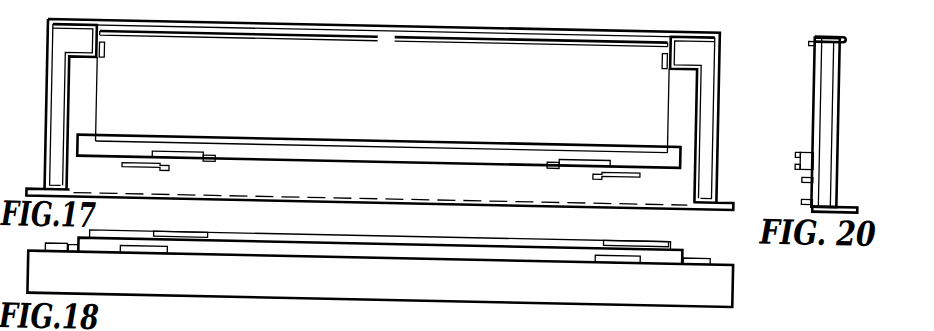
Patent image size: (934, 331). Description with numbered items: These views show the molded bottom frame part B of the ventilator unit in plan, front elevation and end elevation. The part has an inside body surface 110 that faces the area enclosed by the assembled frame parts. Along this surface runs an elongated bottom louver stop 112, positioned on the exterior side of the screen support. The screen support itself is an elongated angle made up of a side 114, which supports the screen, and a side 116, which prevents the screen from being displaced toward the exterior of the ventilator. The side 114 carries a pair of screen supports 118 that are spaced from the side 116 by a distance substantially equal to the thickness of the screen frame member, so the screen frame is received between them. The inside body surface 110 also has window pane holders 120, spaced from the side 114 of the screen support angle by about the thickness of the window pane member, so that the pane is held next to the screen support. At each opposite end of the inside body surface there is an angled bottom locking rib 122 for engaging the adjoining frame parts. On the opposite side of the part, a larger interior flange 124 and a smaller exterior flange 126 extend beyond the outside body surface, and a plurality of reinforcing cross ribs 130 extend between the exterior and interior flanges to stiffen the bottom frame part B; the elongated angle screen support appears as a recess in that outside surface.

In FIG. 17, the bottom frame part B is at (655, 19).
In FIG. 17, the inside body surface 110 is at (317, 91).
In FIG. 17, the bottom louver stop 112 is at (474, 34).
In FIG. 20, the bottom louver stop 112 is at (809, 28).
In FIG. 17, the screen support side 114 is at (376, 155).
In FIG. 18, the screen support side 114 is at (373, 251).
In FIG. 17, the screen retaining side 116 is at (444, 133).
In FIG. 20, the screen retaining side 116 is at (799, 140).
In FIG. 17, the screen supports 118 is at (221, 157).
In FIG. 18, the screen supports 118 is at (222, 236).
In FIG. 20, the screen supports 118 is at (799, 152).
In FIG. 17, the window pane holders 120 is at (165, 167).
In FIG. 18, the window pane holders 120 is at (160, 250).
In FIG. 20, the window pane holders 120 is at (805, 165).
In FIG. 17, the bottom locking rib 122 is at (71, 87).
In FIG. 18, the interior flange 124 is at (698, 284).
In FIG. 20, the interior flange 124 is at (841, 190).
In FIG. 20, the exterior flange 126 is at (849, 12).
In FIG. 20, the reinforcing cross ribs 130 is at (830, 112).